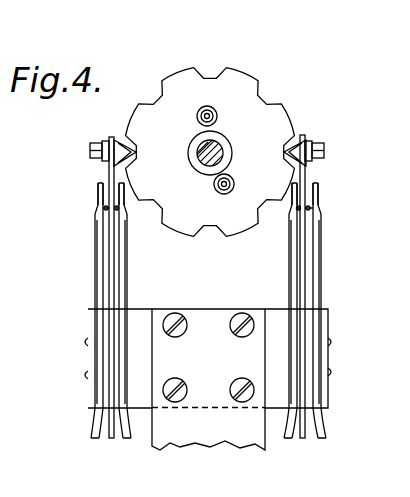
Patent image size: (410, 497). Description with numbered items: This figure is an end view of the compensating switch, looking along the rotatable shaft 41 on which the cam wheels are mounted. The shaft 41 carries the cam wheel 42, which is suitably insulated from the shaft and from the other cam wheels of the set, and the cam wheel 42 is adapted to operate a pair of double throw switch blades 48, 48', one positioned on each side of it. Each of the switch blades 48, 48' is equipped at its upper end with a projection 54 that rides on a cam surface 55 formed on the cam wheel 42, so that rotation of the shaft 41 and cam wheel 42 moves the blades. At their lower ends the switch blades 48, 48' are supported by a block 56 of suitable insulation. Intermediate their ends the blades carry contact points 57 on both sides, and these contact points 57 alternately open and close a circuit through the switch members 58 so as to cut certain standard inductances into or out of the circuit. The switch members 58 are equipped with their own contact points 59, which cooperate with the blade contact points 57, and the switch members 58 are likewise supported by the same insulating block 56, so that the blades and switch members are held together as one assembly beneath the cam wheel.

The rotatable shaft 41 is at (197, 150).
The cam wheel 42 is at (175, 79).
The double throw switch blade 48 is at (80, 287).
The double throw switch blade 48' is at (336, 286).
The projection 54 is at (123, 138).
The cam surface 55 is at (142, 98).
The block 56 is at (144, 314).
The contact point 57 is at (100, 198).
The switch member 58 is at (95, 245).
The contact point 59 is at (104, 209).